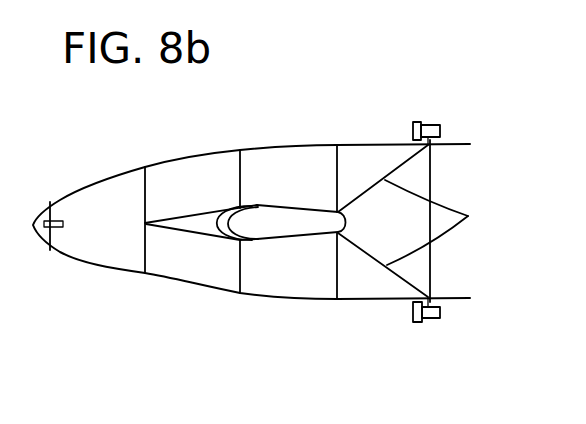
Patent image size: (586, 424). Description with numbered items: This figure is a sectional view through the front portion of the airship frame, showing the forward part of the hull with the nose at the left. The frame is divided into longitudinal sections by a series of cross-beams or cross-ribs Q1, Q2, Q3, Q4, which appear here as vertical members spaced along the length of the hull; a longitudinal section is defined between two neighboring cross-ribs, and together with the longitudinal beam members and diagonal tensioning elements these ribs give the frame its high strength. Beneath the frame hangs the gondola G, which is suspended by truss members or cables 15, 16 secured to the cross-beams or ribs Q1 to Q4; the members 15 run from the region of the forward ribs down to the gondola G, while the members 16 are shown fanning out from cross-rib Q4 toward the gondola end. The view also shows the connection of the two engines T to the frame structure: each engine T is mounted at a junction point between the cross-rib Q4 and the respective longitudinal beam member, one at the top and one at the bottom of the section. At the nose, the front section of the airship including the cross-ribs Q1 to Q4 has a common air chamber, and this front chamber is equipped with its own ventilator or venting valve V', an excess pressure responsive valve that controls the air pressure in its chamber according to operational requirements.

The cross-rib Q1 is at (145, 190).
The cross-rib Q2 is at (240, 170).
The cross-rib Q3 is at (336, 165).
The cross-rib Q4 is at (432, 265).
The engine T is at (430, 123).
The truss members or cables 16 is at (468, 216).
The truss members or cables 15 is at (160, 224).
The gondola G is at (260, 233).
The venting valve V' is at (75, 252).